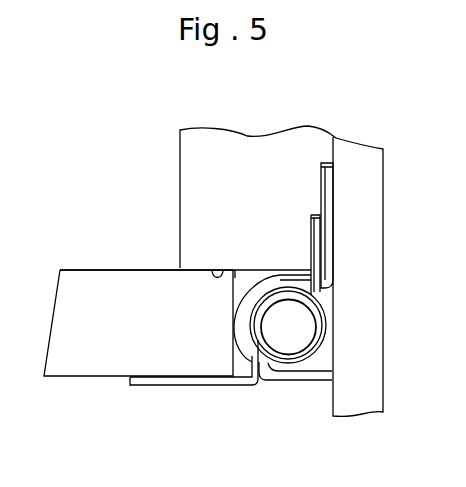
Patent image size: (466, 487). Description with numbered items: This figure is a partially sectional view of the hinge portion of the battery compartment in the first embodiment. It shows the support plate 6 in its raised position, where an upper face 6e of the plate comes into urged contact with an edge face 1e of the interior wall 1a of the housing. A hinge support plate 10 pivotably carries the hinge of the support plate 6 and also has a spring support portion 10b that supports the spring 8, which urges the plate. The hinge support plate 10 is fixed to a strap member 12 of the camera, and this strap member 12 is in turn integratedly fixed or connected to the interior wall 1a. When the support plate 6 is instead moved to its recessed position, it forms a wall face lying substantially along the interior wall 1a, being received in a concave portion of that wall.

The interior wall 1a is at (194, 173).
The edge face 1e is at (221, 277).
The support plate 6 is at (103, 342).
The upper face 6e is at (192, 268).
The spring 8 is at (218, 384).
The hinge support plate 10 is at (330, 198).
The spring support portion 10b is at (287, 373).
The strap member 12 is at (375, 296).